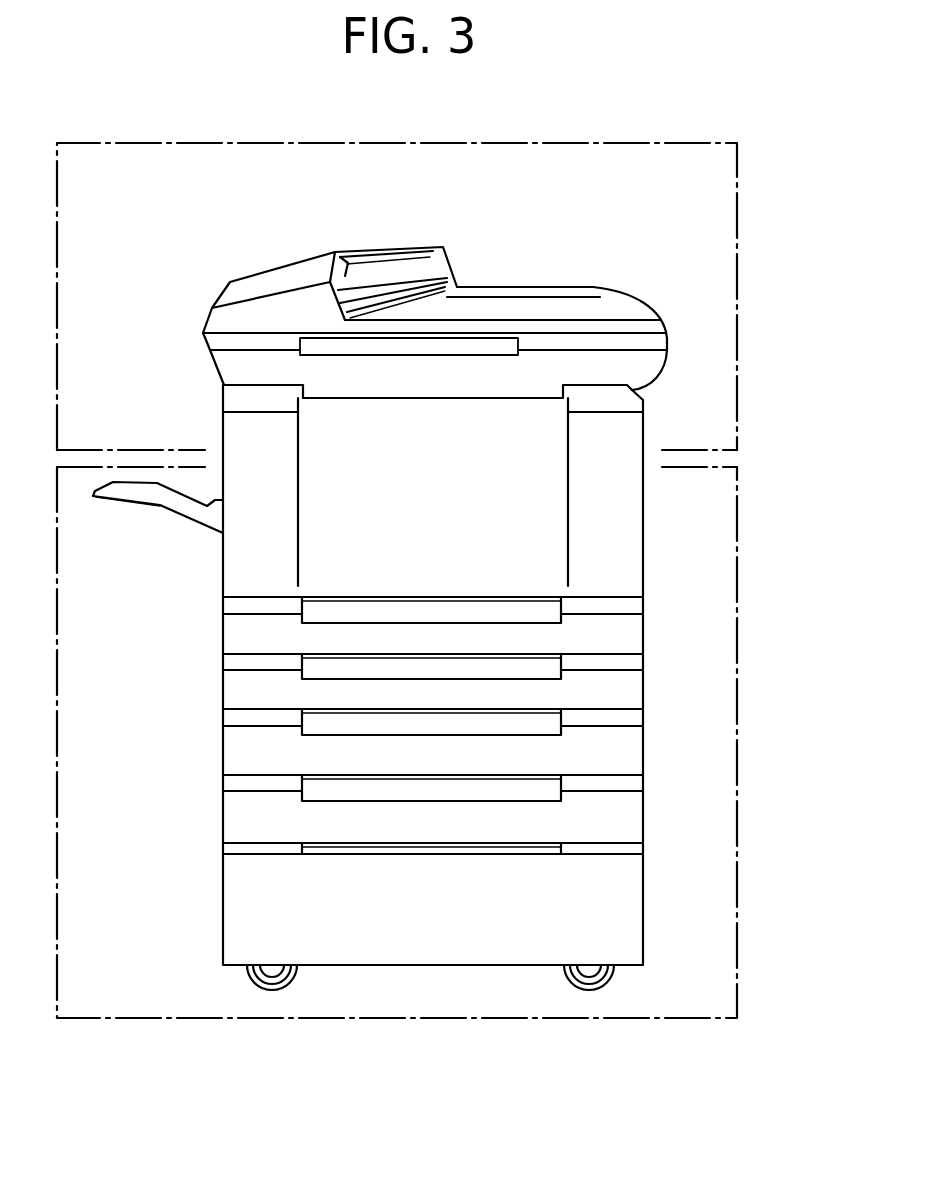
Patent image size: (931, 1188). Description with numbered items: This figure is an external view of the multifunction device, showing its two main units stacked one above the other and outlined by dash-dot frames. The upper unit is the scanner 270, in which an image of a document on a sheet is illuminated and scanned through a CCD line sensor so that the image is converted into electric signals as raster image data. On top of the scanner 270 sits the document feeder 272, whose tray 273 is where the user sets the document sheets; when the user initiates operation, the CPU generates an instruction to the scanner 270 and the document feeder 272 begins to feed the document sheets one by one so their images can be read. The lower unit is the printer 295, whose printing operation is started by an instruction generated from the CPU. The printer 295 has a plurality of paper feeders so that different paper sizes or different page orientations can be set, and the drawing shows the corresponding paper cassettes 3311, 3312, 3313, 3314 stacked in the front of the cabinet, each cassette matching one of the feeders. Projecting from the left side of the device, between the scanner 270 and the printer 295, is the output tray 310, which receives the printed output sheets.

The scanner 270 is at (739, 268).
The document feeder 272 is at (507, 285).
The tray 273 is at (298, 260).
The printer 295 is at (739, 600).
The output tray 310 is at (162, 512).
The paper cassette 3311 is at (233, 630).
The paper cassette 3312 is at (233, 695).
The paper cassette 3313 is at (233, 760).
The paper cassette 3314 is at (233, 825).